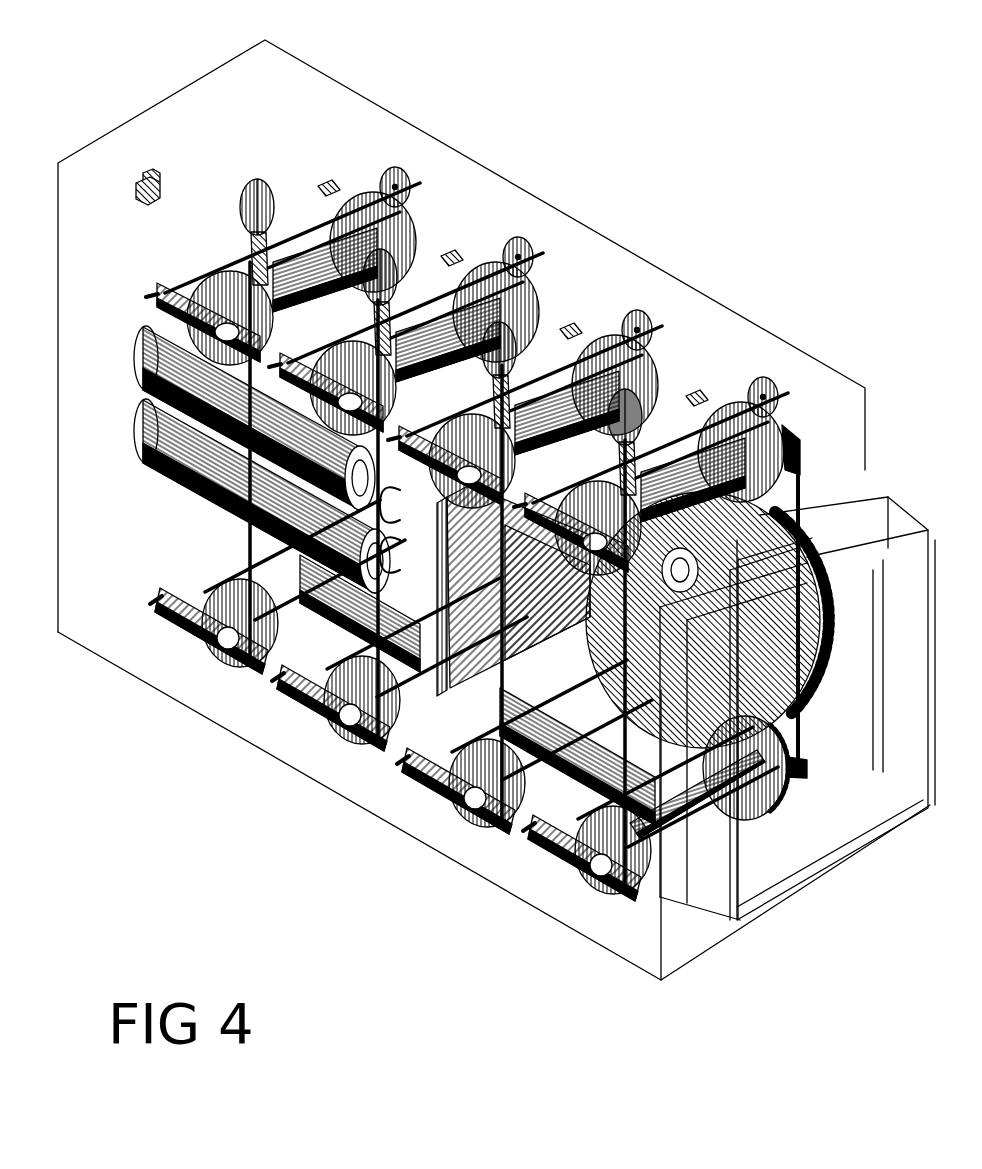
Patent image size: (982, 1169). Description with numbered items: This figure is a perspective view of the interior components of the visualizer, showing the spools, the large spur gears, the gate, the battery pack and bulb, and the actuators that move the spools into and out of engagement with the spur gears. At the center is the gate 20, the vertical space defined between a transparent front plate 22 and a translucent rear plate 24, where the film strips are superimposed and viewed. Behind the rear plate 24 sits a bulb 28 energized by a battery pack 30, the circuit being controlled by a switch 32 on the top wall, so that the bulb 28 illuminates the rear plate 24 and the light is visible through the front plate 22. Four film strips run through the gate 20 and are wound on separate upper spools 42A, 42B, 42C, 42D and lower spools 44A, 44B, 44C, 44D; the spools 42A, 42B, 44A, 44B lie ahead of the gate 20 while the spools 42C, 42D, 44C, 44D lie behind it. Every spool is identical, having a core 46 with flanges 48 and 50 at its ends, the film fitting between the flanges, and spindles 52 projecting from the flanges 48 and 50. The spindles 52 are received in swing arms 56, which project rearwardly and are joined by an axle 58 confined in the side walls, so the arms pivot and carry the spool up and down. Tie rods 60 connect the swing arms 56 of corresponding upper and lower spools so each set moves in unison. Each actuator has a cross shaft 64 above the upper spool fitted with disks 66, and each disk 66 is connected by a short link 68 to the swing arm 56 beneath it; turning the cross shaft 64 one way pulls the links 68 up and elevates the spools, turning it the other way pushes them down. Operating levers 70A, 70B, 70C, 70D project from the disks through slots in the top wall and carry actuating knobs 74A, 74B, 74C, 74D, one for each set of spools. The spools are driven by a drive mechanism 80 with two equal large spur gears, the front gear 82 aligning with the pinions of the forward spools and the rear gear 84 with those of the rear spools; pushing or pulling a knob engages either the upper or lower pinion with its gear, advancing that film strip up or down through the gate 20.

The gate 20 is at (440, 706).
The front plate 22 is at (478, 653).
The rear plate 24 is at (430, 613).
The bulb 28 is at (400, 558).
The battery pack 30 is at (145, 428).
The switch 32 is at (135, 181).
The upper spool 42A is at (702, 392).
The upper spool 42B is at (547, 322).
The upper spool 42C is at (428, 254).
The upper spool 42D is at (306, 188).
The lower spool 44A is at (673, 835).
The lower spool 44B is at (491, 760).
The lower spool 44C is at (205, 663).
The lower spool 44D is at (218, 677).
The core 46 is at (700, 880).
The flange 48 is at (585, 960).
The flange 50 is at (792, 498).
The spindle 52 is at (600, 550).
The swing arm 56 is at (727, 383).
The axle 58 is at (705, 334).
The tie rod 60 is at (802, 714).
The cross shaft 64 is at (760, 408).
The disk 66 is at (790, 438).
The short link 68 is at (706, 453).
The operating lever 70A is at (575, 507).
The operating lever 70B is at (449, 440).
The operating lever 70C is at (330, 363).
The operating lever 70D is at (248, 243).
The actuating knob 74A is at (652, 333).
The actuating knob 74B is at (478, 351).
The actuating knob 74C is at (330, 226).
The actuating knob 74D is at (250, 205).
The drive mechanism 80 is at (820, 560).
The front spur gear 82 is at (790, 631).
The rear spur gear 84 is at (448, 243).